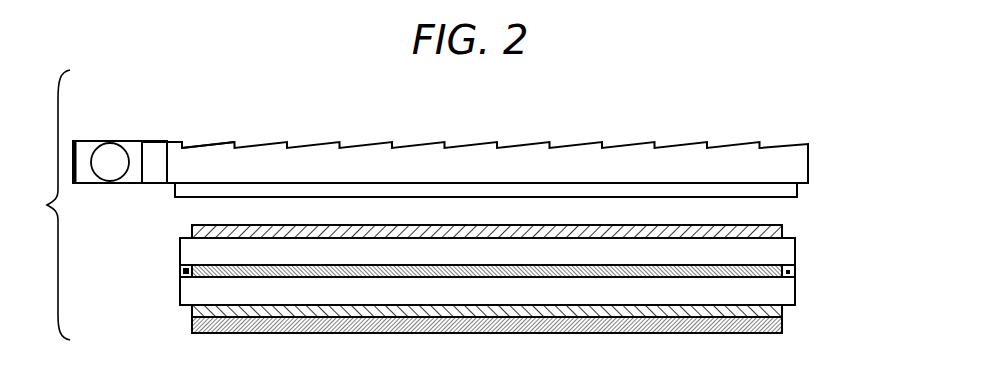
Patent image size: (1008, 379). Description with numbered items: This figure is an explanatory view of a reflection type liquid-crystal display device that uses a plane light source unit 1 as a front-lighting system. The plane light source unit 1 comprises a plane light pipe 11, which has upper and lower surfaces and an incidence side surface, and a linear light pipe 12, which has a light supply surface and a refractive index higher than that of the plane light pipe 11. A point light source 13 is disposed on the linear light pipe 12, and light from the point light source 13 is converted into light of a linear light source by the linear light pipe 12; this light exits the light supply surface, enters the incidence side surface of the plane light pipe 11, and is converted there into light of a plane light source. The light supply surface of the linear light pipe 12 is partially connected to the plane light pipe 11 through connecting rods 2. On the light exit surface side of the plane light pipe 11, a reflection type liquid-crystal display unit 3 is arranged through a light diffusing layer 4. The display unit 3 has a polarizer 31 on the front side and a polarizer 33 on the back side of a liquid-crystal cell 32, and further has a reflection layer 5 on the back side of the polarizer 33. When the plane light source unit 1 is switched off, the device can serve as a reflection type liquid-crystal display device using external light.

The plane light source unit 1 is at (832, 156).
The connecting rods 2 is at (162, 148).
The plane light pipe 11 is at (480, 162).
The linear light pipe 12 is at (87, 140).
The point light source 13 is at (113, 152).
The light diffusing layer 4 is at (800, 187).
The reflection type liquid-crystal display unit 3 is at (541, 274).
The polarizer 31 is at (784, 232).
The liquid-crystal cell 32 is at (795, 255).
The polarizer 33 is at (526, 322).
The reflection layer 5 is at (784, 328).